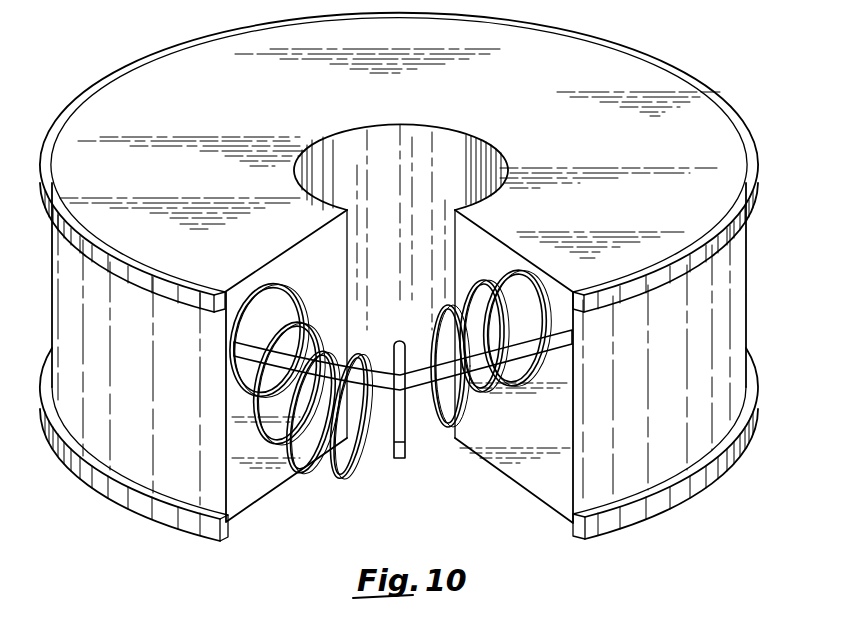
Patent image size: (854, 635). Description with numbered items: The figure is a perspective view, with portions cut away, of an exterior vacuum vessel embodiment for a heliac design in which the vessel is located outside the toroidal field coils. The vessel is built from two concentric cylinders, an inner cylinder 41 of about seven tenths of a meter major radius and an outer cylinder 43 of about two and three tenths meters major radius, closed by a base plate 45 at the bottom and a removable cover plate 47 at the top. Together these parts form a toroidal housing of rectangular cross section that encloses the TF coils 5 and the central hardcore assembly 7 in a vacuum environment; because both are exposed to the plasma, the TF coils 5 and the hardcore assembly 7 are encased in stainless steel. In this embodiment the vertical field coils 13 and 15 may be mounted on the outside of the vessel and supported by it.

The TF coils 5 is at (343, 480).
The central hardcore assembly 7 is at (417, 391).
The vertical field coil 13 is at (759, 186).
The vertical field coil 15 is at (690, 488).
The inner concentric cylinder 41 is at (396, 182).
The outer concentric cylinder 43 is at (193, 371).
The base plate 45 is at (537, 437).
The removable cover plate 47 is at (566, 137).